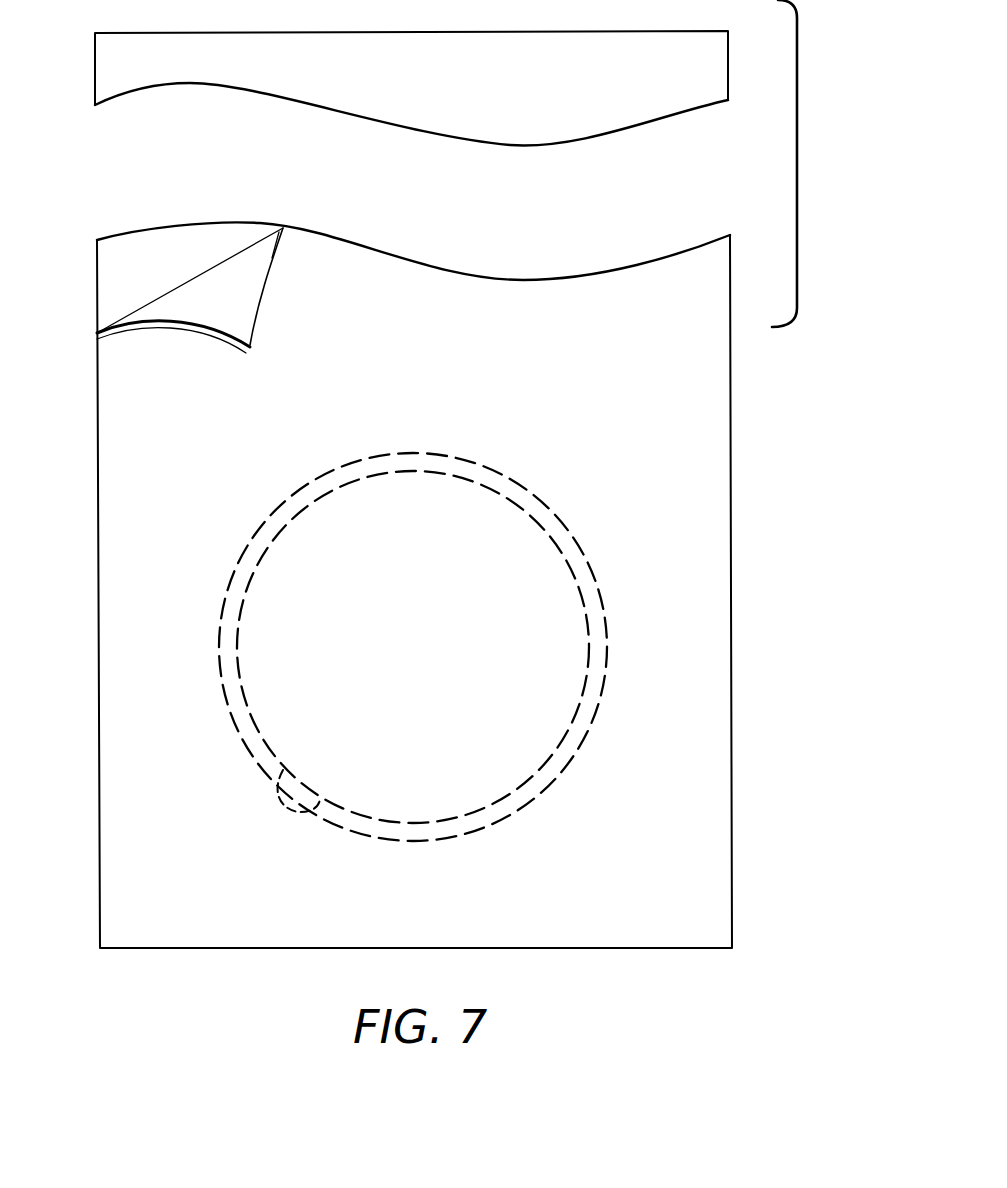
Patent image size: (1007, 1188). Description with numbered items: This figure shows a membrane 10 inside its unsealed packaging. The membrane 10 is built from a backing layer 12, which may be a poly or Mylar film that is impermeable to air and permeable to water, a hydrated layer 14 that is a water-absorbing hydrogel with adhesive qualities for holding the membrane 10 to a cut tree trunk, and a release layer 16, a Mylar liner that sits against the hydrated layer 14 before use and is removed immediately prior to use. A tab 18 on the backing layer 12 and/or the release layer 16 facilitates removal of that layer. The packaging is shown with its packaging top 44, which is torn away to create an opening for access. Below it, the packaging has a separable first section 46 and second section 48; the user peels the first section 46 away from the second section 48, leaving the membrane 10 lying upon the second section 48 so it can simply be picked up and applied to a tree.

The membrane 10 is at (448, 639).
The backing layer 12 is at (448, 618).
The hydrated layer 14 is at (509, 495).
The release layer 16 is at (356, 464).
The tab 18 is at (280, 808).
The packaging top 44 is at (600, 107).
The first section 46 is at (207, 303).
The second section 48 is at (120, 277).